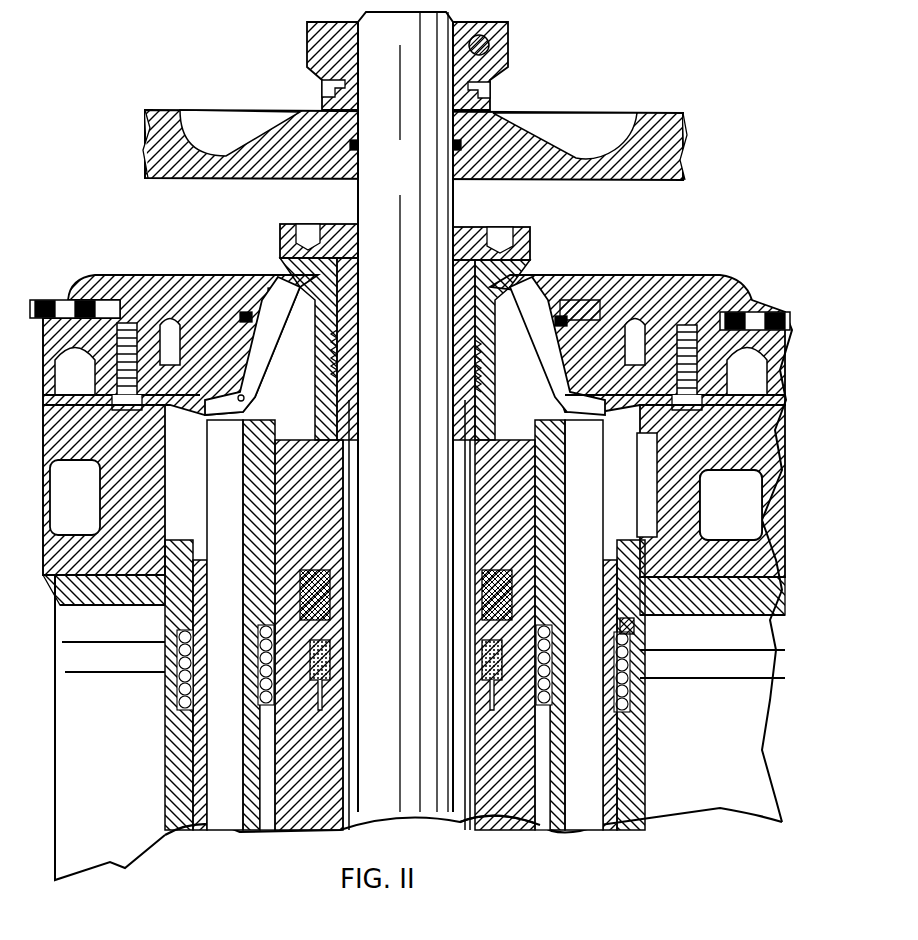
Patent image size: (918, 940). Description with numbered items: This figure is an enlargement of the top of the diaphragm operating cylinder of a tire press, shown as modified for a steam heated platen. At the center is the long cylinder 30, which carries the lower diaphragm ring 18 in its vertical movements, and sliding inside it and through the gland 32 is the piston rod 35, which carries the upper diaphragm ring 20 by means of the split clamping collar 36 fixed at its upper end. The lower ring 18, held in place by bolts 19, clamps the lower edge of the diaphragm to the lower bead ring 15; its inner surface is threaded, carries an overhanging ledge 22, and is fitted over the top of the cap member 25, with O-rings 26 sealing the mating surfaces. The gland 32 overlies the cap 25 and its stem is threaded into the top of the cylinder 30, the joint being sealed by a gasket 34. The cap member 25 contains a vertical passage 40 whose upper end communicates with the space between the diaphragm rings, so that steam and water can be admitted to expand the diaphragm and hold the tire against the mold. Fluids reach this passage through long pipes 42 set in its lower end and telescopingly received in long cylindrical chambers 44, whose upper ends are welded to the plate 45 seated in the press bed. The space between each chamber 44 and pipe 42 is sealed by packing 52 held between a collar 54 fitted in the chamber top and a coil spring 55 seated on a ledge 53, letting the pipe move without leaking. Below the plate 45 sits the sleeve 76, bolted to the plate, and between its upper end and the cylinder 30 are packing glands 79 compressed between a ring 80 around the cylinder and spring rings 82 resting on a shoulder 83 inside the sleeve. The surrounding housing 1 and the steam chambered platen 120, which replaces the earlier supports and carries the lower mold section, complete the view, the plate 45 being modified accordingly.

The housing 1 is at (703, 618).
The lower bead ring 15 is at (766, 384).
The diaphragm plate ring 18 is at (715, 292).
The bolts 19 is at (120, 402).
The diaphragm plate ring 20 is at (180, 130).
The overhanging ledge 22 is at (253, 303).
The cap member 25 is at (600, 300).
The O-rings 26 is at (560, 345).
The cylinder 30 is at (470, 540).
The gland 32 is at (475, 232).
The gasket 34 is at (338, 330).
The piston rod 35 is at (412, 132).
The split clamping collar 36 is at (498, 53).
The vertical passage 40 is at (236, 399).
The pipes 42 is at (198, 772).
The cylindrical chambers 44 is at (177, 740).
The plate 45 is at (165, 600).
The packing 52 is at (630, 628).
The ledge 53 is at (180, 706).
The collar 54 is at (625, 528).
The coil spring 55 is at (632, 678).
The sleeve 76 is at (494, 806).
The packing glands 79 is at (320, 595).
The ring 80 is at (305, 470).
The spring rings 82 is at (330, 660).
The shoulder 83 is at (322, 688).
The steam chambered platen 120 is at (695, 495).